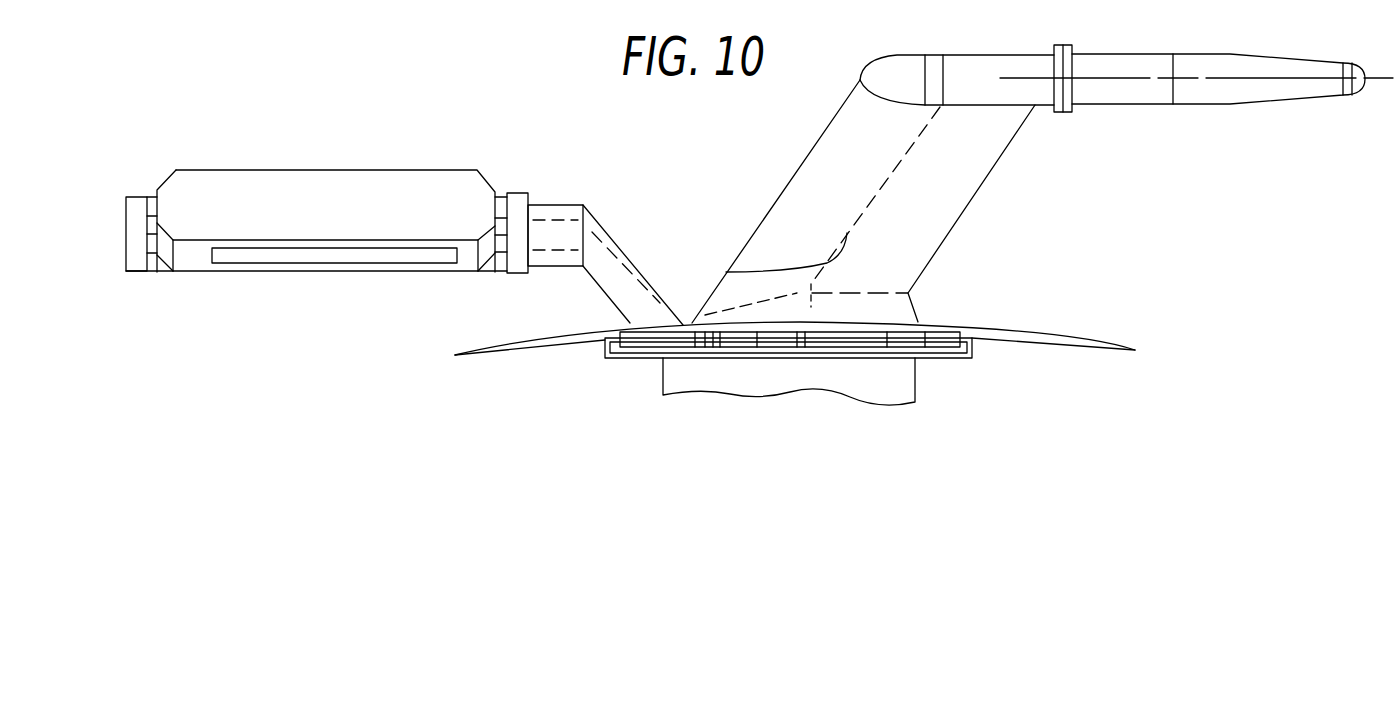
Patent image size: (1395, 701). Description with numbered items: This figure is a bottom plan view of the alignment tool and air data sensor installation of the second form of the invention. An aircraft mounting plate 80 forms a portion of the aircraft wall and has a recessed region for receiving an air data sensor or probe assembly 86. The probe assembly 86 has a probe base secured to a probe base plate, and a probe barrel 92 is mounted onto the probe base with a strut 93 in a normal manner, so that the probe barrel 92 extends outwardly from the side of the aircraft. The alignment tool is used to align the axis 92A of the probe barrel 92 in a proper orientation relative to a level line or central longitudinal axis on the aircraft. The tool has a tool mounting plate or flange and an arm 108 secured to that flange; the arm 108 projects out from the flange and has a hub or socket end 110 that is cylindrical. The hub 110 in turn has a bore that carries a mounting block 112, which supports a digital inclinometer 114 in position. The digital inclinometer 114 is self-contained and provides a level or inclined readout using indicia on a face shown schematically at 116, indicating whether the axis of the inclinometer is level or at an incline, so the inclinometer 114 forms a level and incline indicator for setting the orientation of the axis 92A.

The aircraft mounting plate 80 is at (950, 347).
The air data sensor assembly 86 is at (768, 204).
The probe barrel 92 is at (1215, 90).
The axis of the probe barrel 92A is at (1380, 80).
The strut 93 is at (942, 210).
The arm 108 is at (633, 260).
The hub or socket end 110 is at (560, 215).
The mounting block 112 is at (502, 273).
The digital inclinometer 114 is at (400, 170).
The indicia on a face 116 is at (350, 257).